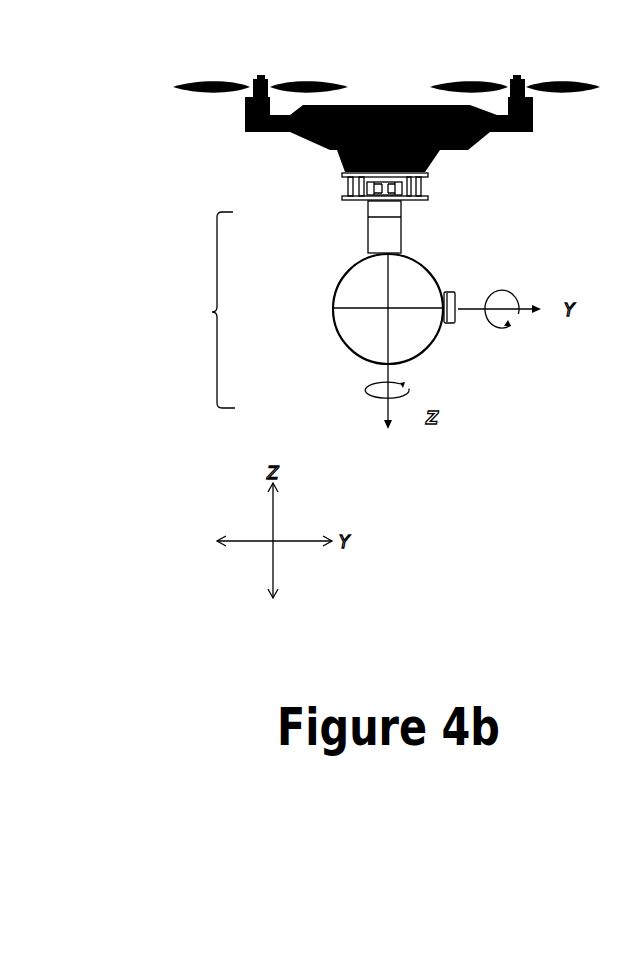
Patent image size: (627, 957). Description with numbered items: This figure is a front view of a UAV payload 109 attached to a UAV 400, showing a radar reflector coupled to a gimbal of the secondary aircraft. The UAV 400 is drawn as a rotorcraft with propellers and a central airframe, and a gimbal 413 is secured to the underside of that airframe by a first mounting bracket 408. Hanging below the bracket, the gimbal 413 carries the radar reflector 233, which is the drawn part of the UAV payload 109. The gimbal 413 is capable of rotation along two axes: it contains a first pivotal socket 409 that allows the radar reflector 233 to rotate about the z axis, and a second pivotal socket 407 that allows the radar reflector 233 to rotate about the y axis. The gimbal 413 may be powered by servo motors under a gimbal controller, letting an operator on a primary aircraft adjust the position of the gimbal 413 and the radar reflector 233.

The UAV 400 is at (402, 104).
The first mounting bracket 408 is at (343, 173).
The first pivotal socket 409 is at (425, 185).
The gimbal 413 is at (470, 244).
The UAV payload 109 is at (212, 312).
The radar reflector 233 is at (352, 350).
The second pivotal socket 407 is at (452, 325).